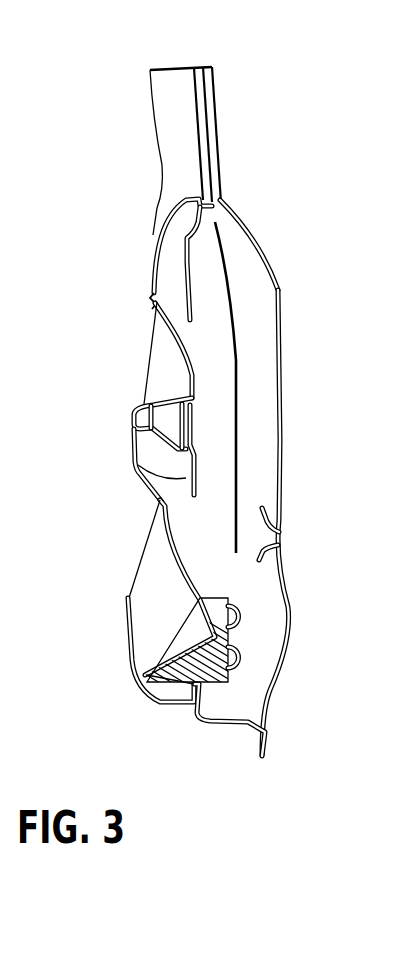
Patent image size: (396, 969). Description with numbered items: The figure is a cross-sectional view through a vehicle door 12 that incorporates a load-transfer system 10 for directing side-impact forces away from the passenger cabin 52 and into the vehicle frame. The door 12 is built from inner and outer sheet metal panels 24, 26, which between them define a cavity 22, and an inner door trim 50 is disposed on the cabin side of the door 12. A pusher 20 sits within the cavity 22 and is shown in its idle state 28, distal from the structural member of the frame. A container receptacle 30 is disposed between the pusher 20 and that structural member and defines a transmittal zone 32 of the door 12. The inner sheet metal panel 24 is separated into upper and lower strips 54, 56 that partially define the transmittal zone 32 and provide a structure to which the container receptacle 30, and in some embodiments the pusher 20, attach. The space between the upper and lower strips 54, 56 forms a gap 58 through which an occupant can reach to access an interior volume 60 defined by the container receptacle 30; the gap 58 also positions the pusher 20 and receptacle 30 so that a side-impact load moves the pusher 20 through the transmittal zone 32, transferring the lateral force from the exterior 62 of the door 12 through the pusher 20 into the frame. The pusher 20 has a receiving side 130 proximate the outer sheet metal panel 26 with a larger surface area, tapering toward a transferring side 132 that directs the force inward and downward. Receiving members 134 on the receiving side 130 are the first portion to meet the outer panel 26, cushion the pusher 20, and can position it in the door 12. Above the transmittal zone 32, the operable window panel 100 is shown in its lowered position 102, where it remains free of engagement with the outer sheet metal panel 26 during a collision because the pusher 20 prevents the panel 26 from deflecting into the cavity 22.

The load-transfer system 10 is at (113, 672).
The vehicle door 12 is at (233, 148).
The pusher 20 is at (208, 670).
The cavity 22 is at (207, 520).
The inner sheet metal panel 24 is at (133, 464).
The outer sheet metal panel 26 is at (283, 350).
The idle state 28 is at (237, 688).
The container receptacle 30 is at (187, 587).
The transmittal zone 32 is at (178, 527).
The inner door trim 50 is at (149, 243).
The passenger cabin 52 is at (119, 154).
The upper strip 54 is at (155, 527).
The lower strip 56 is at (129, 625).
The gap 58 is at (135, 543).
The interior volume 60 is at (174, 631).
The exterior 62 is at (281, 473).
The operable window panel 100 is at (224, 283).
The lowered position 102 is at (245, 322).
The receiving side 130 is at (230, 638).
The transferring side 132 is at (147, 672).
The receiving member 134 is at (238, 612).